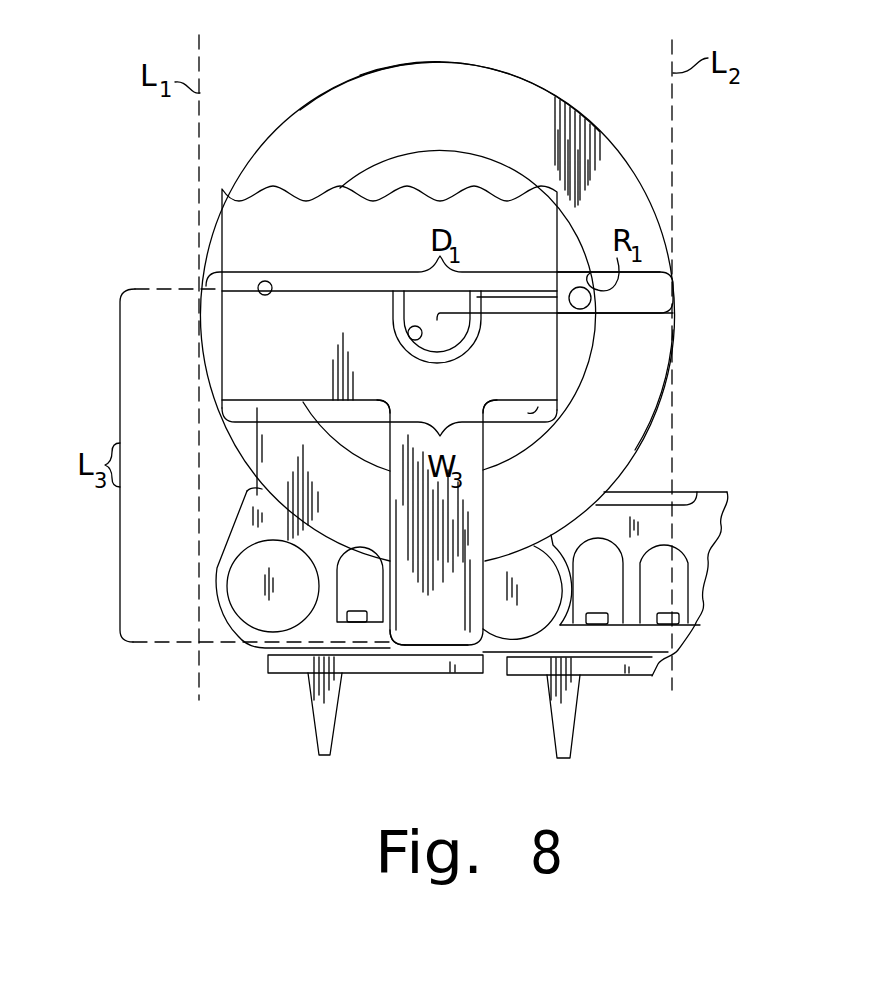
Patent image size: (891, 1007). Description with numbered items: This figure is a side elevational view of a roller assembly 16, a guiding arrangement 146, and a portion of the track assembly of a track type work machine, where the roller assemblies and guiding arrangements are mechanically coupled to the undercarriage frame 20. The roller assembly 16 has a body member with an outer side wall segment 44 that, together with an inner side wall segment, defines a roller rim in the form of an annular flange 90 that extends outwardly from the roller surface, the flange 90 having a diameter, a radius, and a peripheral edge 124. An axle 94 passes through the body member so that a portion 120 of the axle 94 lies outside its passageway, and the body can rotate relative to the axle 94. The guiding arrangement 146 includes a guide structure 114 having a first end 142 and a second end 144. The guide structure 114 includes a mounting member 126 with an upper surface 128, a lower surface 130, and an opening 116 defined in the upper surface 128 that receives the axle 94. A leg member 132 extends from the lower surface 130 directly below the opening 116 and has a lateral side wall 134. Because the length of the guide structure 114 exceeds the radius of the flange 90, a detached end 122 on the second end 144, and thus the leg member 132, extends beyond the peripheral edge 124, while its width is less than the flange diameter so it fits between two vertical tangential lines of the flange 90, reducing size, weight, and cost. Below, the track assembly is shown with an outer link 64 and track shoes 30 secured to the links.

The roller assembly 16 is at (556, 60).
The undercarriage frame 20 is at (228, 237).
The track shoes 30 is at (287, 667).
The outer side wall segment 44 is at (448, 78).
The outer link 64 is at (245, 637).
The annular flange 90 is at (360, 75).
The axle 94 is at (450, 330).
The guide structure 114 is at (378, 427).
The opening 116 is at (413, 340).
The portion of axle 120 is at (393, 318).
The detached end 122 is at (392, 645).
The peripheral edge 124 is at (665, 402).
The mounting member 126 is at (548, 357).
The upper surface 128 is at (268, 296).
The lower surface 130 is at (530, 412).
The leg member 132 is at (478, 537).
The lateral side wall 134 is at (448, 633).
The first end 142 is at (337, 275).
The second end 144 is at (430, 652).
The guiding arrangement 146 is at (760, 343).